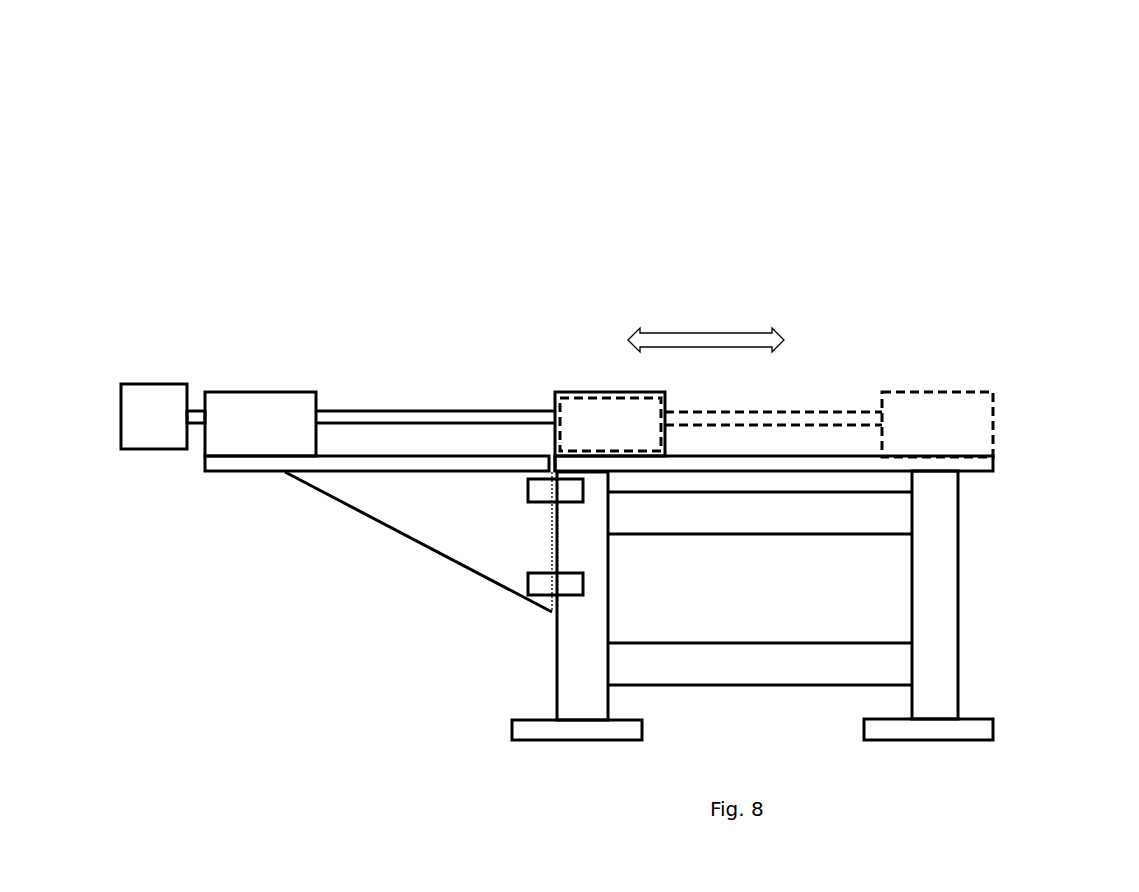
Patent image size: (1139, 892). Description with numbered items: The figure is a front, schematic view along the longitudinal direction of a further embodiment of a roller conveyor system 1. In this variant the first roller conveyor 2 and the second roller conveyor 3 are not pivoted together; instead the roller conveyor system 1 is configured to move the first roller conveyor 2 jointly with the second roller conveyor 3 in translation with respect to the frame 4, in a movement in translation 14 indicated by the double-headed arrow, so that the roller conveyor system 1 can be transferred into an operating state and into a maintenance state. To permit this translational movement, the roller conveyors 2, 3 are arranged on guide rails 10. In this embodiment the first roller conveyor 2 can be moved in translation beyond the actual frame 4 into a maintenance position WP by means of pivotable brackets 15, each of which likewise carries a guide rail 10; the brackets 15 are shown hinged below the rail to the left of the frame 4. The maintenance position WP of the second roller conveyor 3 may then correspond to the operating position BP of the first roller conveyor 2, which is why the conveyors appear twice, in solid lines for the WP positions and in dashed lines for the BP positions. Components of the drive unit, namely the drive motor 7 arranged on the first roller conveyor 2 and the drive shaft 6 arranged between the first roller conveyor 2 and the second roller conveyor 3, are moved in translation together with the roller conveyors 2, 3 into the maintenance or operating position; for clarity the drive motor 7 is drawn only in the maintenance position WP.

The roller conveyor system 1 is at (908, 95).
The first roller conveyor 2 is at (283, 417).
The second roller conveyor 3 is at (575, 392).
The frame 4 is at (938, 613).
The drive shaft 6 is at (440, 412).
The drive motor 7 is at (133, 417).
The guide rail 10 is at (393, 463).
The movement in translation 14 is at (702, 332).
The pivotable bracket 15 is at (493, 512).